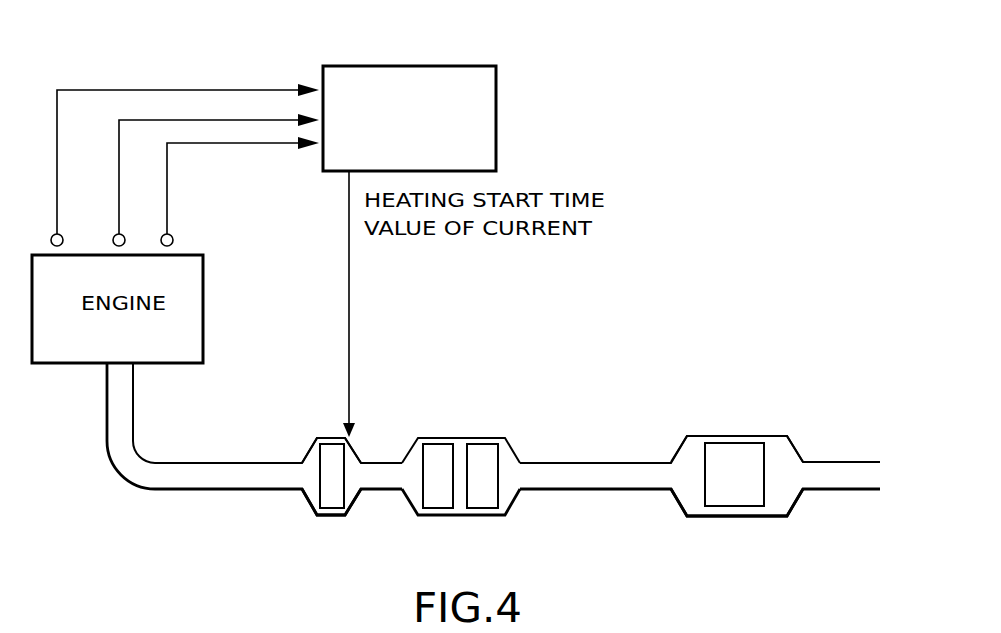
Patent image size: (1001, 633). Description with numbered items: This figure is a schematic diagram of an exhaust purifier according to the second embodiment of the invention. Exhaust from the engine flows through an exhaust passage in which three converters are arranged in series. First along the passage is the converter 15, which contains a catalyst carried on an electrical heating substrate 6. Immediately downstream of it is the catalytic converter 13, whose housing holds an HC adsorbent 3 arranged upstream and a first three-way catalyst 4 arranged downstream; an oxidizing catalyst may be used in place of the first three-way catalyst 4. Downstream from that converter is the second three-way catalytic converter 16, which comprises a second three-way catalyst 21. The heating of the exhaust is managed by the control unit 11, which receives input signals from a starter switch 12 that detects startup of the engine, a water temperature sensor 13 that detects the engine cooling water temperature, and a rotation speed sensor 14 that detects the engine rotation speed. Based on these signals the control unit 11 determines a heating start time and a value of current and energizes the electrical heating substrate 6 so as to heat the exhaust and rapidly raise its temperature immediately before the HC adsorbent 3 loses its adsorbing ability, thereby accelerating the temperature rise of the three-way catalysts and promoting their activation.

The HC adsorbent 3 is at (436, 502).
The first three-way catalyst 4 is at (488, 502).
The electrical heating substrate 6 is at (331, 502).
The control unit 11 is at (497, 101).
The starter switch 12 is at (173, 238).
The water temperature sensor 13 is at (123, 235).
The rotation speed sensor 14 is at (52, 234).
The converter 15 is at (323, 437).
The second three-way catalytic converter 16 is at (720, 435).
The second three-way catalyst 21 is at (740, 500).